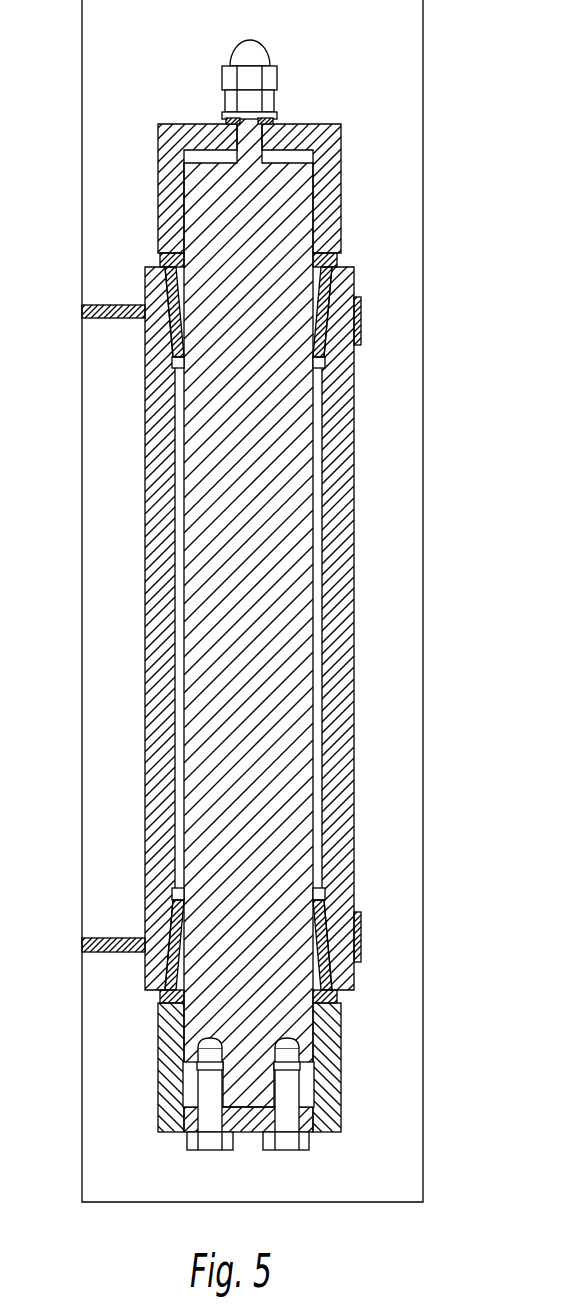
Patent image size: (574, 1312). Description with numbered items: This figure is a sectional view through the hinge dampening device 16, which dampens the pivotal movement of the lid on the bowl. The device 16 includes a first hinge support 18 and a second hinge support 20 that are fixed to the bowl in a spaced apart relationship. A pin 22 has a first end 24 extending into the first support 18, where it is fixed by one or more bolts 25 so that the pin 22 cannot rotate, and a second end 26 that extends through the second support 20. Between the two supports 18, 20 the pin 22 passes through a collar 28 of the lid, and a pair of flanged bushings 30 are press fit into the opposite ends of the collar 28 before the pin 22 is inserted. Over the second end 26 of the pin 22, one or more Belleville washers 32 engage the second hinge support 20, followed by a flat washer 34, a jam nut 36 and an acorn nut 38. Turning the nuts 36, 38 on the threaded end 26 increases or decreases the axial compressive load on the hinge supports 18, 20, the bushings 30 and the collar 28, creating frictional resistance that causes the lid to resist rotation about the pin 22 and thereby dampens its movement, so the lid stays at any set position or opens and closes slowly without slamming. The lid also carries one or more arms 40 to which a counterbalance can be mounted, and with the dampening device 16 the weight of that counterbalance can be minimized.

The hinge dampening device 16 is at (455, 323).
The first hinge support 18 is at (340, 1055).
The second hinge support 20 is at (335, 157).
The pin 22 is at (205, 600).
The first end 24 is at (247, 1108).
The bolts 25 is at (203, 1150).
The second end 26 is at (236, 126).
The collar 28 is at (346, 565).
The flanged bushings 30 is at (325, 292).
The Belleville washers 32 is at (276, 121).
The flat washer 34 is at (240, 126).
The jam nut 36 is at (270, 97).
The acorn nut 38 is at (252, 50).
The arms 40 is at (97, 305).